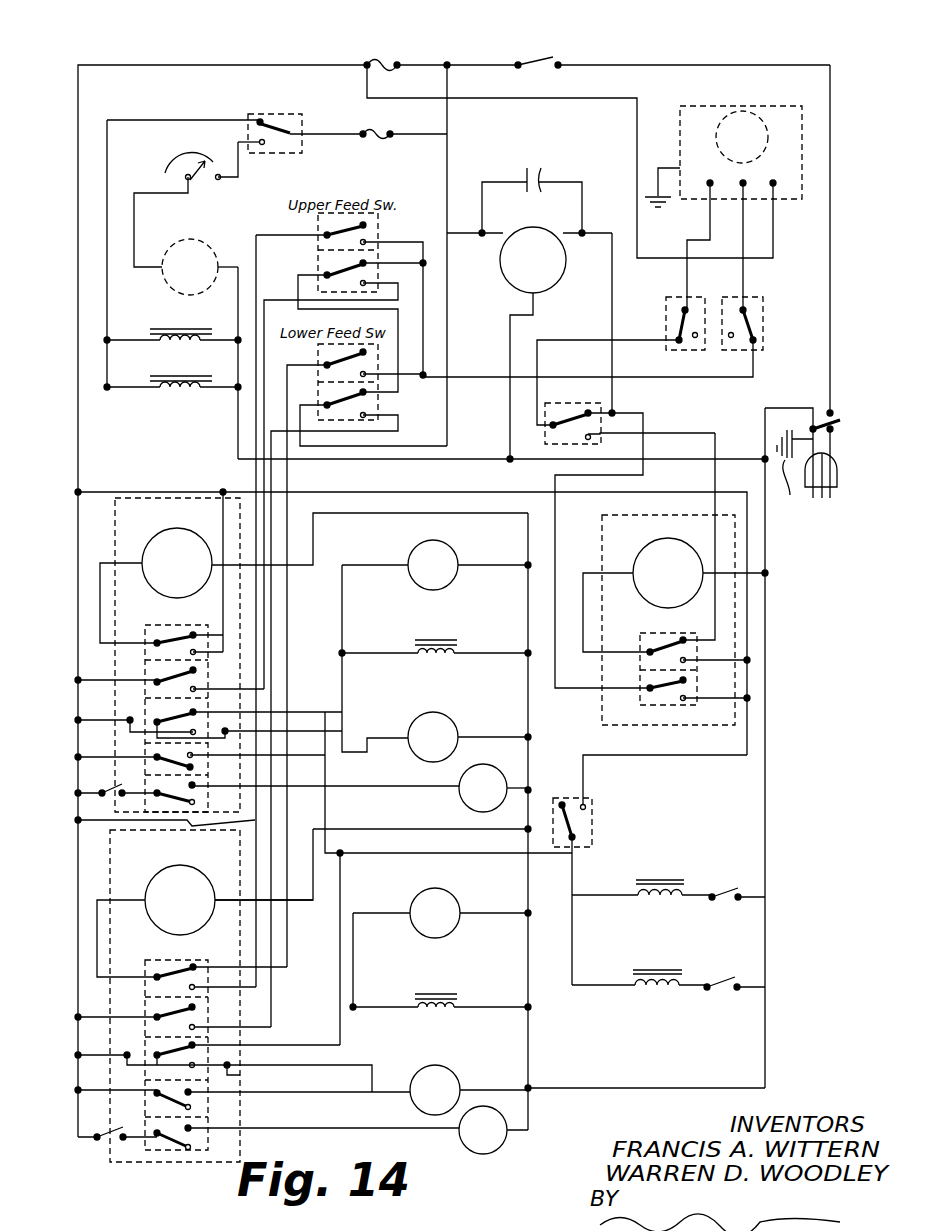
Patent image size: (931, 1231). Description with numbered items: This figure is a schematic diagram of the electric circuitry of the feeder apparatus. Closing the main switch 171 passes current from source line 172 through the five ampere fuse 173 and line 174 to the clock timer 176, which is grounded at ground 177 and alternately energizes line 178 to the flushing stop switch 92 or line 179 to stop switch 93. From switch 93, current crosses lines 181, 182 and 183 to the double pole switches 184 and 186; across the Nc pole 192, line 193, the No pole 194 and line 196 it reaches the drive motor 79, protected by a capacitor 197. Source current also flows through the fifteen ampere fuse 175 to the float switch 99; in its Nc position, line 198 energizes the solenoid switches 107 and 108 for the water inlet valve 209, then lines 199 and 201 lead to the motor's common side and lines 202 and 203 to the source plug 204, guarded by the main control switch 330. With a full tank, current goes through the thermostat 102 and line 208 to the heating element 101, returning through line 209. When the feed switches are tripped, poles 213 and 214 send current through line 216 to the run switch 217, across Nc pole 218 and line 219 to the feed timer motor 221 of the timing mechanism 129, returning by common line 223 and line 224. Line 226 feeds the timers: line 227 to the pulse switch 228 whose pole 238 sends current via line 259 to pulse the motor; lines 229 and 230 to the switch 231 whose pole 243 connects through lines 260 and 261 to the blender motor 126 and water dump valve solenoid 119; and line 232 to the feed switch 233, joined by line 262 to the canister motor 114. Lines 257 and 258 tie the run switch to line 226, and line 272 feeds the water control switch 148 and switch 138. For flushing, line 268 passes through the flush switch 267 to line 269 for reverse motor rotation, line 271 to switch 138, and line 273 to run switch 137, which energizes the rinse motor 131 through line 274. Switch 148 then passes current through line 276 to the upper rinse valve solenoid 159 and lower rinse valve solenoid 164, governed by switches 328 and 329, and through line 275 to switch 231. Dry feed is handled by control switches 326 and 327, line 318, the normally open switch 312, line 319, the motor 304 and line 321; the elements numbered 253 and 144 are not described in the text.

The line 226 is at (224, 65).
The 5 Amp fuse 173 is at (405, 52).
The main switch 171 is at (560, 55).
The source line 172 is at (785, 65).
The line 174 is at (565, 98).
The 15 Amp fuse 175 is at (393, 138).
The line 198 is at (185, 98).
The float switch 99 is at (305, 142).
The thermostat 102 is at (205, 172).
The line 208 is at (136, 216).
The heating element 101 is at (162, 274).
The line 199 is at (238, 425).
The line 209 is at (228, 296).
The solenoid switch 107 is at (170, 348).
The solenoid switch 108 is at (160, 398).
The pole switch 213 is at (327, 234).
The double pole switch 184 is at (372, 228).
The Nc pole 192 is at (328, 270).
The line 193 is at (300, 279).
The line 183 is at (430, 266).
The line 259 is at (264, 640).
The pole switch 214 is at (327, 362).
The line 182 is at (430, 370).
The double pole switch 186 is at (380, 404).
The line 201 is at (497, 440).
The line 196 is at (447, 425).
The No pole 194 is at (336, 406).
The line 181 is at (705, 377).
The line 202 is at (532, 463).
The drive motor 79 is at (512, 283).
The capacitor 197 is at (527, 185).
The line 269 is at (612, 315).
The clock timer 176 is at (760, 115).
The ground 177 is at (660, 212).
The line 178 is at (688, 272).
The line 179 is at (745, 280).
The stop switch 92 is at (668, 298).
The stop switch 93 is at (762, 298).
The line 268 is at (538, 368).
The flush switch 267 is at (572, 400).
The common line 223 is at (348, 510).
The line 271 is at (643, 455).
The line 273 is at (718, 440).
The line 203 is at (773, 406).
The main control switch 330 is at (846, 411).
The source plug 204 is at (837, 476).
The line 258 is at (190, 492).
The line 257 is at (228, 505).
The line 272 is at (750, 605).
The motor 131 is at (700, 568).
The line 274 is at (585, 605).
The run switch 137 is at (668, 640).
The switch 138 is at (665, 700).
The timing mechanism 129 is at (117, 492).
The feed timer motor 221 is at (143, 549).
The line 219 is at (100, 600).
The run switch 217 is at (202, 630).
The Nc pole 218 is at (165, 638).
The pulse switch 228 is at (150, 675).
The pole 238 is at (170, 678).
The line 227 is at (78, 678).
The switch 231 is at (150, 712).
The pole 243 is at (175, 720).
The line 229 is at (78, 718).
The line 230 is at (128, 722).
The line 261 is at (310, 731).
The line 262 is at (347, 752).
The line 260 is at (170, 758).
The line 232 is at (78, 755).
The feed switch 233 is at (120, 788).
The timer switch 253 is at (145, 768).
The control switch 326 is at (100, 805).
The line 318 is at (96, 828).
The normally open switch 312 is at (255, 820).
The line 319 is at (384, 786).
The blender motor 126 is at (410, 556).
The water dump valve solenoid 119 is at (412, 662).
The canister motor 144 is at (458, 732).
The motor 304 is at (505, 752).
The line 321 is at (510, 810).
The line 275 is at (326, 812).
The water control switch 148 is at (565, 798).
The line 276 is at (572, 895).
The upper rinse valve solenoid 159 is at (655, 905).
The switch 328 is at (722, 902).
The lower rinse valve solenoid 164 is at (662, 998).
The switch 329 is at (717, 995).
The common line 224 is at (768, 1022).
The canister motor 114 is at (458, 1080).
The line 216 is at (285, 960).
The control switch 327 is at (108, 1150).